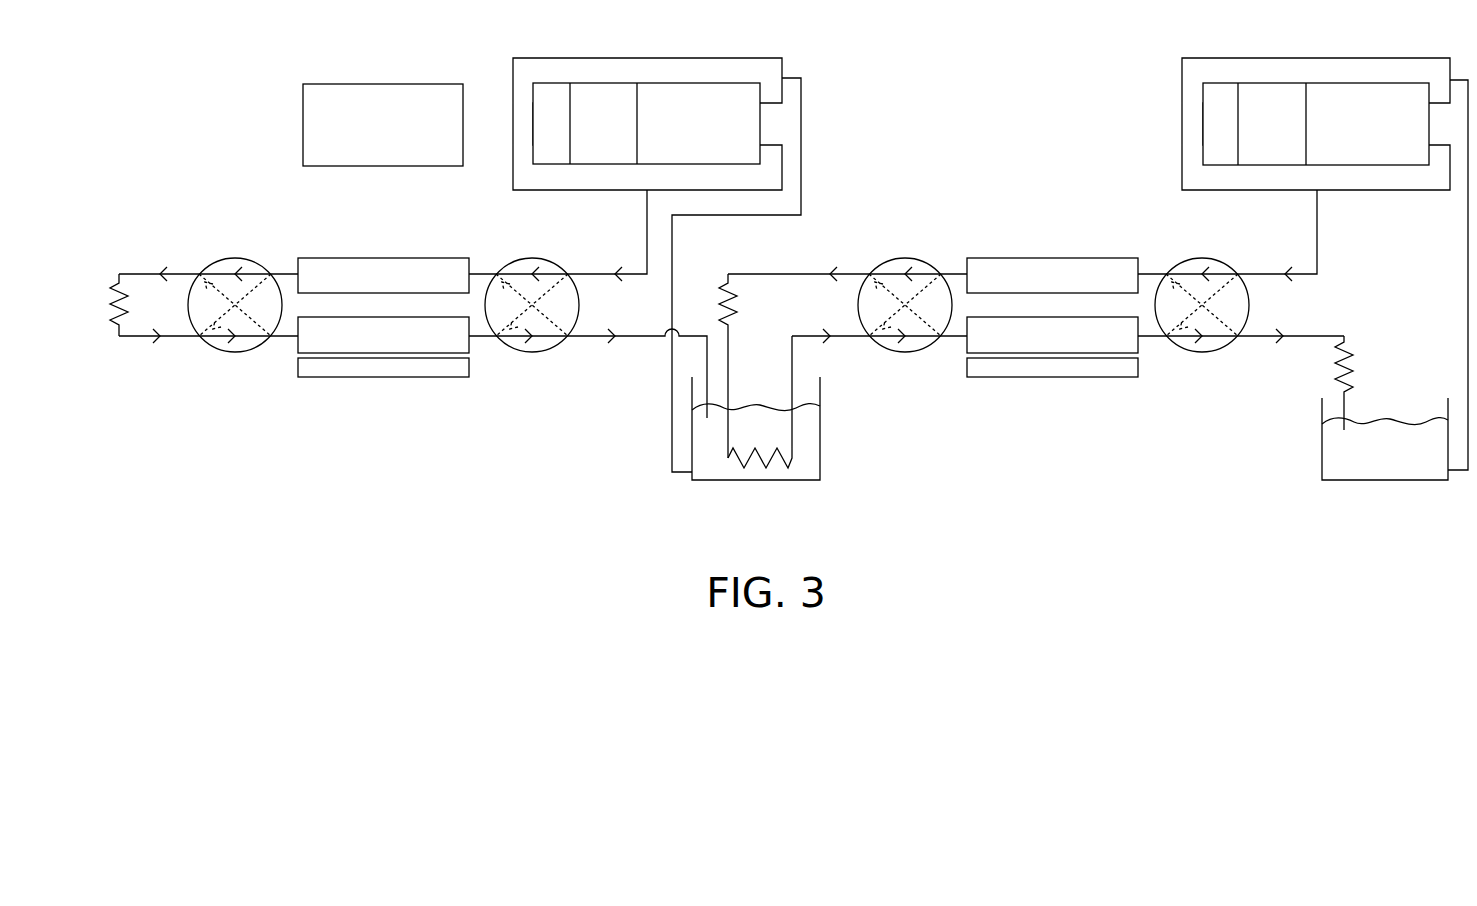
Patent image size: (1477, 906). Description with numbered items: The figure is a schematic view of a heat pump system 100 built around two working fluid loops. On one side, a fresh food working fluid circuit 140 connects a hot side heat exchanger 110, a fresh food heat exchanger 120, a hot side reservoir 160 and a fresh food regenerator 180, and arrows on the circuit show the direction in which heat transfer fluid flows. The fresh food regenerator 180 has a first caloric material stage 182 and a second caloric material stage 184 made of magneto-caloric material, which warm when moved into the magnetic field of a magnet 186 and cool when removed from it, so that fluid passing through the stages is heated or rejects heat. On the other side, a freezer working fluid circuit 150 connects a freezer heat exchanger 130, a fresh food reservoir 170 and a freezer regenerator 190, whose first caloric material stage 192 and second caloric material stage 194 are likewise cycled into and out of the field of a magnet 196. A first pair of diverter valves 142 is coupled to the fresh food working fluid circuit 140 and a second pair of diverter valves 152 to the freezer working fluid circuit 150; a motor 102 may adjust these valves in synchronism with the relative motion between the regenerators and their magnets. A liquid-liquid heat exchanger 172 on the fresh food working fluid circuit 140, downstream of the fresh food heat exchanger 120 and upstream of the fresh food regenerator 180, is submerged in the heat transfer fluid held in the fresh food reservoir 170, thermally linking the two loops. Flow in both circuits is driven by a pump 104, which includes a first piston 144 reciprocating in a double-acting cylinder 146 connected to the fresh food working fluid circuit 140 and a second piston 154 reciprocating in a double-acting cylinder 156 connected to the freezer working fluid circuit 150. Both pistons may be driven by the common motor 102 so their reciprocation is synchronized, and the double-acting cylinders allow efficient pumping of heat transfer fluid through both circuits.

The heat pump system 100 is at (175, 200).
The motor 102 is at (383, 125).
The pump 104 is at (718, 100).
The hot side heat exchanger 110 is at (1340, 360).
The fresh food heat exchanger 120 is at (722, 283).
The freezer heat exchanger 130 is at (113, 326).
The fresh food working fluid circuit 140 is at (1325, 243).
The first pair of diverter valves 142 is at (900, 260).
The first piston 144 is at (1260, 103).
The double-acting cylinder 146 is at (1372, 178).
The freezer working fluid circuit 150 is at (645, 222).
The second pair of diverter valves 152 is at (237, 352).
The second piston 154 is at (607, 105).
The double-acting cylinder 156 is at (770, 120).
The hot side reservoir 160 is at (1322, 450).
The fresh food reservoir 170 is at (795, 428).
The liquid-liquid heat exchanger 172 is at (757, 462).
The fresh food regenerator 180 is at (1060, 306).
The first caloric material stage 182 is at (1065, 272).
The second caloric material stage 184 is at (1130, 344).
The magnet 186 is at (1067, 365).
The freezer regenerator 190 is at (401, 300).
The first caloric material stage 192 is at (451, 272).
The second caloric material stage 194 is at (468, 348).
The magnet 196 is at (440, 367).